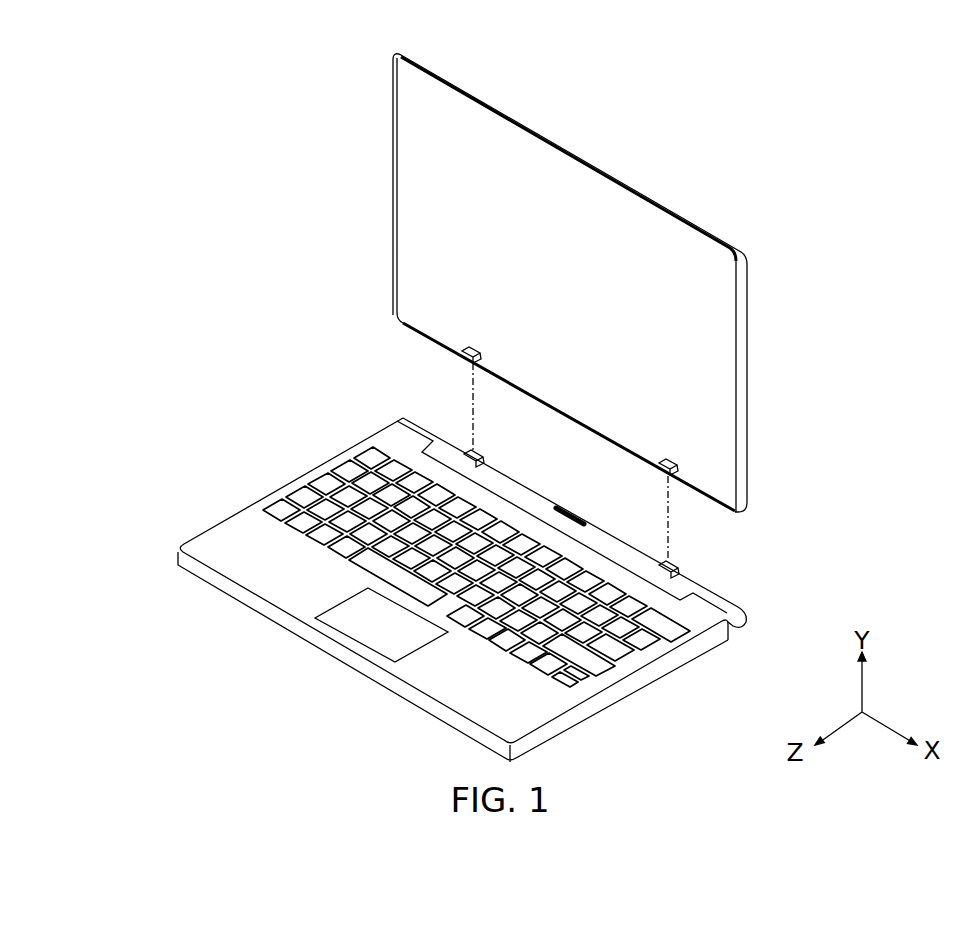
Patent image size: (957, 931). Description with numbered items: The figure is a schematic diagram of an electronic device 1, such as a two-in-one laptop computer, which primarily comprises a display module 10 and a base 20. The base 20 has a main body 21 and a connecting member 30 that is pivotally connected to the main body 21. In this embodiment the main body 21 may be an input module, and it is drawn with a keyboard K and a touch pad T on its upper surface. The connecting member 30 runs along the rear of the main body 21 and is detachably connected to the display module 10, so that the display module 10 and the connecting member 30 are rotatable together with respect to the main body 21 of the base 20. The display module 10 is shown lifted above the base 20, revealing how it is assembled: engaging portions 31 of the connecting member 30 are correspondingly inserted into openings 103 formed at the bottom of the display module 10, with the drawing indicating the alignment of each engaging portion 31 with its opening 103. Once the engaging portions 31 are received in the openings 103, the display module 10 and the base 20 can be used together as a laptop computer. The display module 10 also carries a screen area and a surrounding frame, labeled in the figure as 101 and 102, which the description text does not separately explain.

The electronic device 1 is at (209, 107).
The display module 10 is at (757, 335).
The display screen 101 is at (441, 130).
The frame 102 is at (657, 197).
The openings 103 is at (466, 348).
The base 20 is at (304, 456).
The main body 21 is at (522, 703).
The connecting member 30 is at (748, 617).
The engaging portions 31 is at (468, 453).
The keyboard K is at (348, 472).
The touch pad T is at (370, 625).